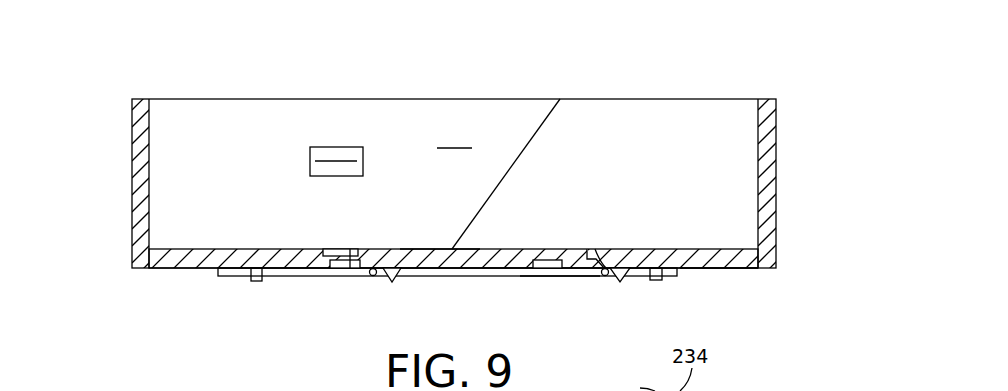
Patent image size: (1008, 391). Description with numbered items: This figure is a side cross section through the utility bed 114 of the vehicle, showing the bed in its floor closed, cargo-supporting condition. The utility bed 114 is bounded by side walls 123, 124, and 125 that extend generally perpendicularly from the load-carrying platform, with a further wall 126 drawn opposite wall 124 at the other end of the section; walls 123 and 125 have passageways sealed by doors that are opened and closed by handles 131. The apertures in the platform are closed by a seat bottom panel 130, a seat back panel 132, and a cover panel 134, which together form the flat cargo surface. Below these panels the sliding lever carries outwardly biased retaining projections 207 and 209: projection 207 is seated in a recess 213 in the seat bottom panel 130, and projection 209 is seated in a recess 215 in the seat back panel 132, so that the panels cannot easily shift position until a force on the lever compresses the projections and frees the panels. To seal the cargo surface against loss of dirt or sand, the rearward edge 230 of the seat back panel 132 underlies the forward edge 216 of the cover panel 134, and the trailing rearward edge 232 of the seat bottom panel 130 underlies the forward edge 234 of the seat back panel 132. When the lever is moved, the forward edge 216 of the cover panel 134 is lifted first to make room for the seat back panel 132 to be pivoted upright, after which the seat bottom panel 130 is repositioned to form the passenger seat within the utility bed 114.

The utility bed 114 is at (258, 99).
The side wall 123 is at (455, 136).
The side wall 124 is at (141, 167).
The side wall 125 is at (207, 134).
The right side wall 126 is at (766, 157).
The seat bottom panel 130 is at (190, 262).
The handle 131 is at (342, 152).
The seat back panel 132 is at (438, 257).
The cover panel 134 is at (708, 258).
The retaining projection 207 is at (340, 272).
The retaining projection 209 is at (548, 275).
The recess 213 is at (347, 250).
The recess 215 is at (550, 258).
The forward edge 216 is at (590, 249).
The rearward edge 230 is at (592, 268).
The trailing rearward edge 232 is at (353, 272).
The forward edge 234 is at (350, 255).